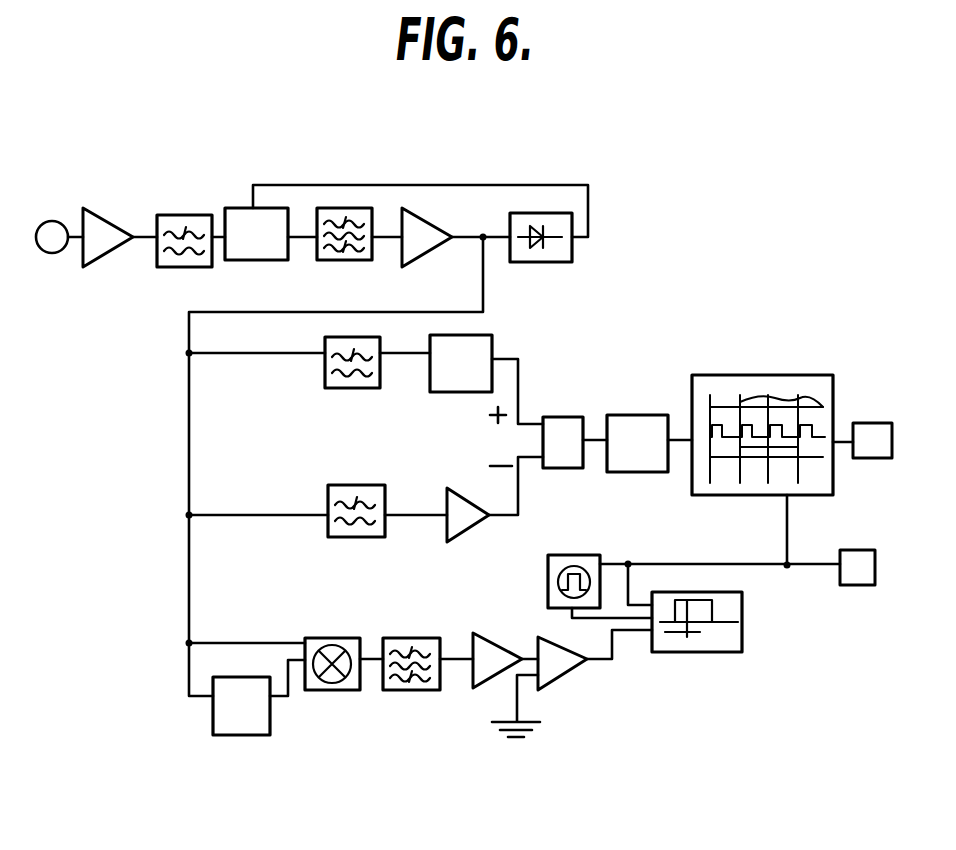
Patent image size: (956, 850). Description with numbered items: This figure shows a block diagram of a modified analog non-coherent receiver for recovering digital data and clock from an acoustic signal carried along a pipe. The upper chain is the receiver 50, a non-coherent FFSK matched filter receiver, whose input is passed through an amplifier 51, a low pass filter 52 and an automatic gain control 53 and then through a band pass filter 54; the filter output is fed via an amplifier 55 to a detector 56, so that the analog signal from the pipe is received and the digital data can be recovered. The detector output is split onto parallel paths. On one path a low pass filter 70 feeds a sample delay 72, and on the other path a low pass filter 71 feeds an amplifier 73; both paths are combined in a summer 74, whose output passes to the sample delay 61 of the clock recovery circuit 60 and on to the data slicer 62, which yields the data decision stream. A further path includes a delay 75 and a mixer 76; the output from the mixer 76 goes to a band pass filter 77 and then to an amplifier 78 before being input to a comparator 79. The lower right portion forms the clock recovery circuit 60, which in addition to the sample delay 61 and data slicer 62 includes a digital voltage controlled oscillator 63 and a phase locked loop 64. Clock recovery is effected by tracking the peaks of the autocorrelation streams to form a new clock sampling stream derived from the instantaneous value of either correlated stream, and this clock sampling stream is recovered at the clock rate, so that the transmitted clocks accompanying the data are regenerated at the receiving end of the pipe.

The receiver 50 is at (697, 194).
The amplifier 51 is at (104, 212).
The low pass filter 52 is at (196, 218).
The automatic gain control 53 is at (240, 215).
The band pass filter 54 is at (340, 215).
The amplifier 55 is at (420, 222).
The detector 56 is at (551, 218).
The clock recovery circuit 60 is at (792, 651).
The sample delay 61 is at (645, 420).
The data slicer 62 is at (765, 385).
The digital voltage controlled oscillator 63 is at (560, 562).
The phase locked loop 64 is at (722, 640).
The low pass filter 70 is at (335, 380).
The low pass filter 71 is at (358, 490).
The sample delay 72 is at (450, 382).
The amplifier 73 is at (460, 503).
The summer 74 is at (573, 423).
The delay 75 is at (225, 713).
The mixer 76 is at (325, 638).
The band pass filter 77 is at (412, 638).
The amplifier 78 is at (493, 650).
The comparator 79 is at (562, 663).